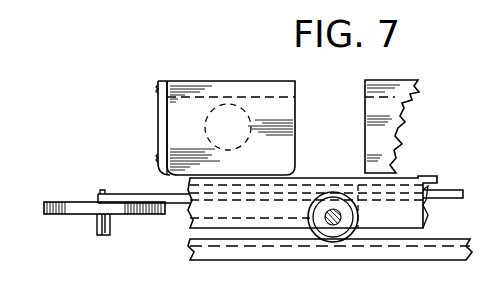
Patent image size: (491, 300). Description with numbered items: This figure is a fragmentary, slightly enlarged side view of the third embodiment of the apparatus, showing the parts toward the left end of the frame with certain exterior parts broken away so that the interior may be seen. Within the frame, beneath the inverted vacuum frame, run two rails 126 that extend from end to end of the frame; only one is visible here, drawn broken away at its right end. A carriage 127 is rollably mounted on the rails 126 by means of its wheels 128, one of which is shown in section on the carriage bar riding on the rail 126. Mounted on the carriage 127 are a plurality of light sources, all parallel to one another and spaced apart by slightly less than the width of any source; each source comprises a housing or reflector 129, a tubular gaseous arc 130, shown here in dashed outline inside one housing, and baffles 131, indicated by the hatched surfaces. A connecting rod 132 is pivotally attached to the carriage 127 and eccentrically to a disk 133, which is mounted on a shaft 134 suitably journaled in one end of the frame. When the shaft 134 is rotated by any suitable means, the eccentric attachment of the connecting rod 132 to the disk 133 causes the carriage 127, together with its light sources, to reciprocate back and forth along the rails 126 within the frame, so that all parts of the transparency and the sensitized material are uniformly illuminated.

The rails 126 is at (190, 256).
The carriage 127 is at (158, 122).
The wheels 128 is at (308, 217).
The housings or reflectors 129 is at (367, 137).
The tubular gaseous arcs 130 is at (228, 112).
The baffles 131 is at (194, 90).
The connecting rod 132 is at (137, 197).
The disk 133 is at (73, 207).
The shaft 134 is at (100, 226).